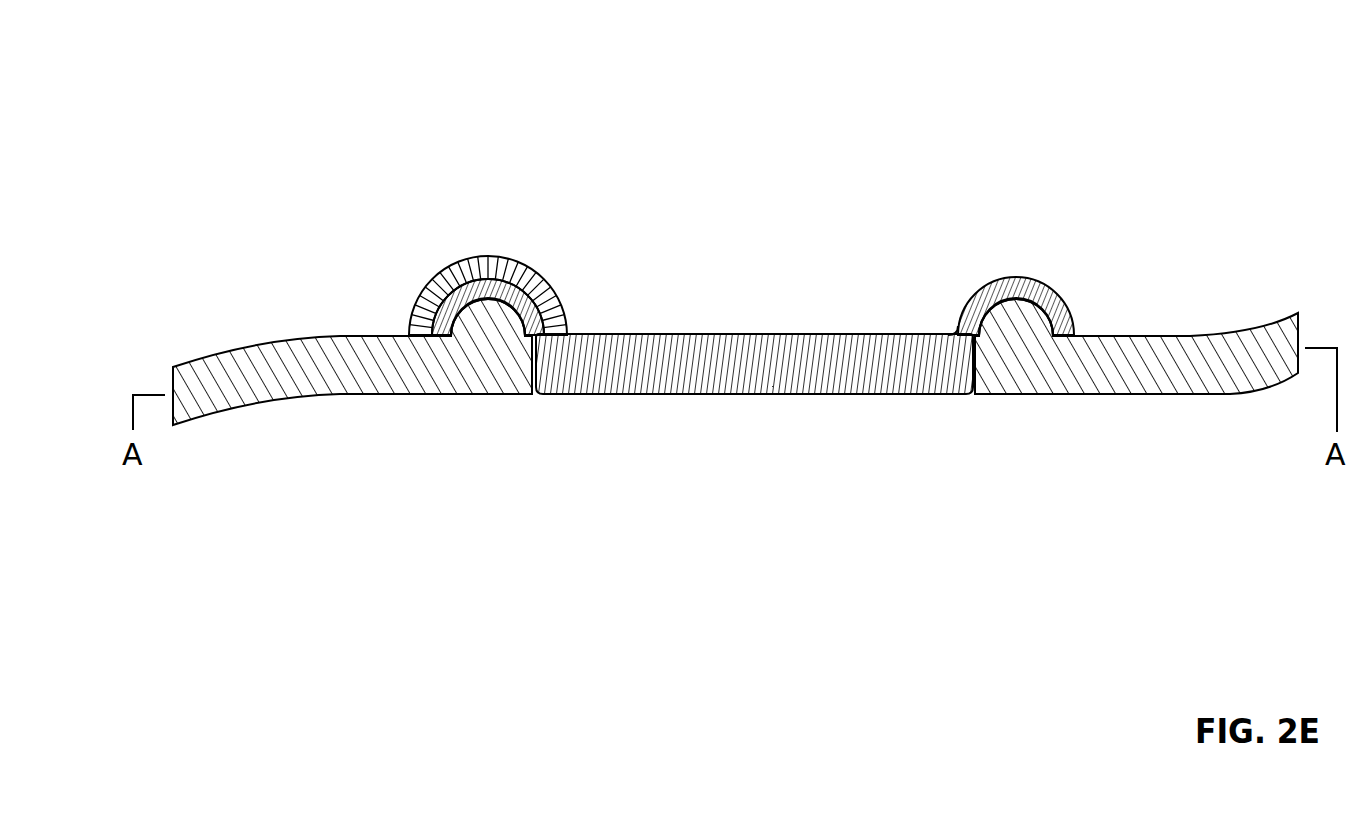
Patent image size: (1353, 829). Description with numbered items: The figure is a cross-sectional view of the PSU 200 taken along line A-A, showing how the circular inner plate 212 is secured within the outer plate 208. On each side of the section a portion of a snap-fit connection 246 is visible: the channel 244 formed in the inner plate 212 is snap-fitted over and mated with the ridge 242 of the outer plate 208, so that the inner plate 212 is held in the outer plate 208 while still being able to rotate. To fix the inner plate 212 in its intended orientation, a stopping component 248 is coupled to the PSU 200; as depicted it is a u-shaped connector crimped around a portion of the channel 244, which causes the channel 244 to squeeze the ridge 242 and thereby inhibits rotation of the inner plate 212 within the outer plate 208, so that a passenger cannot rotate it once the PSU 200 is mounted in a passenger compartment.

The PSU 200 is at (735, 371).
The outer plate 208 is at (215, 410).
The inner plate 212 is at (838, 394).
The ridge 242 is at (488, 336).
The channel 244 is at (533, 317).
The snap-fit connection 246 is at (755, 320).
The stopping component 248 is at (420, 288).